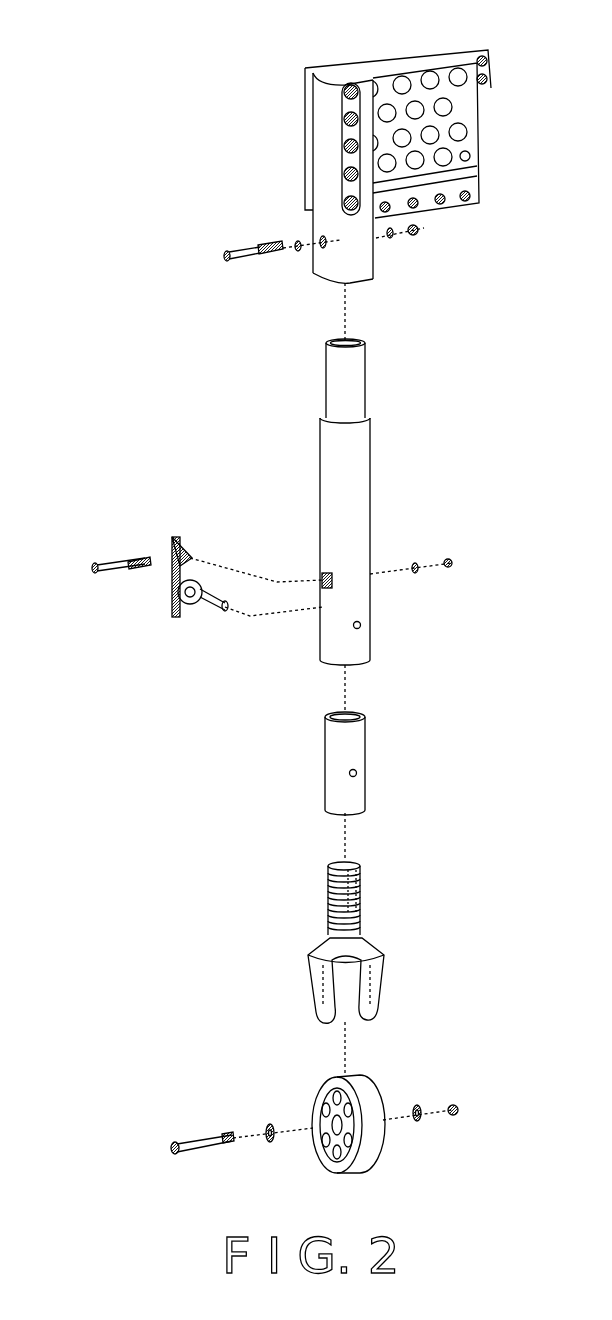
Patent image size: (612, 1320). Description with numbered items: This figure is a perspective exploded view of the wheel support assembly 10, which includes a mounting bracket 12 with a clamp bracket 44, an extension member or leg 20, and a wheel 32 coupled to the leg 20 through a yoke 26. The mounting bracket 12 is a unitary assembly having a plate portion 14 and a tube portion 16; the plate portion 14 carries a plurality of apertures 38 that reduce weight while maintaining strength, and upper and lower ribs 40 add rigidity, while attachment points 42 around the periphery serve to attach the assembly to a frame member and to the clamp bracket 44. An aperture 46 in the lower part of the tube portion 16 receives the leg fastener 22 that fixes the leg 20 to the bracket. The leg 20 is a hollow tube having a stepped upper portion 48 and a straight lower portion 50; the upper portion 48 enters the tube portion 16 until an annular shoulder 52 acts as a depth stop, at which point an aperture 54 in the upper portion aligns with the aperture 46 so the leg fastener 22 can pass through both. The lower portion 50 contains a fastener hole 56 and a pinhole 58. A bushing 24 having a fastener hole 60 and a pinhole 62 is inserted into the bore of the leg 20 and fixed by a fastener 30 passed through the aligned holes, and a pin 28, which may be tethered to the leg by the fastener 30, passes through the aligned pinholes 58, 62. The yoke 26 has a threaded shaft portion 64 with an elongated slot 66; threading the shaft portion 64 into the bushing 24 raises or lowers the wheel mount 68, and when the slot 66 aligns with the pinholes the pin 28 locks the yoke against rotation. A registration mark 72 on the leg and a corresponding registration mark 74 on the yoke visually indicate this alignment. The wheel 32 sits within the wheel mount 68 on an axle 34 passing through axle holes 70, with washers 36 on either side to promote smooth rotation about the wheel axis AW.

The wheel support assembly 10 is at (85, 443).
The mounting bracket 12 is at (403, 53).
The plate portion 14 is at (470, 146).
The tube portion 16 is at (325, 183).
The leg 20 is at (360, 480).
The leg fastener 22 is at (250, 257).
The bushing 24 is at (357, 748).
The yoke 26 is at (355, 930).
The pin 28 is at (207, 603).
The fastener 30 is at (113, 569).
The wheel 32 is at (360, 1087).
The axle 34 is at (197, 1137).
The washers 36 is at (273, 1143).
The apertures 38 is at (460, 80).
The ribs 40 is at (430, 65).
The attachment points 42 is at (350, 143).
The clamp bracket 44 is at (313, 70).
The aperture 46 is at (320, 245).
The stepped upper portion 48 is at (357, 382).
The straight lower portion 50 is at (366, 653).
The annular shoulder 52 is at (366, 418).
The aperture 54 is at (328, 368).
The fastener hole 56 is at (322, 578).
The pinhole 58 is at (358, 623).
The fastener hole 60 is at (330, 738).
The pinhole 62 is at (357, 776).
The threaded shaft portion 64 is at (330, 887).
The elongated slot 66 is at (362, 883).
The wheel mount 68 is at (367, 983).
The axle hole 70 is at (320, 1007).
The registration mark 72 is at (323, 652).
The registration mark 74 is at (323, 967).
The wheel axis AW is at (280, 1127).